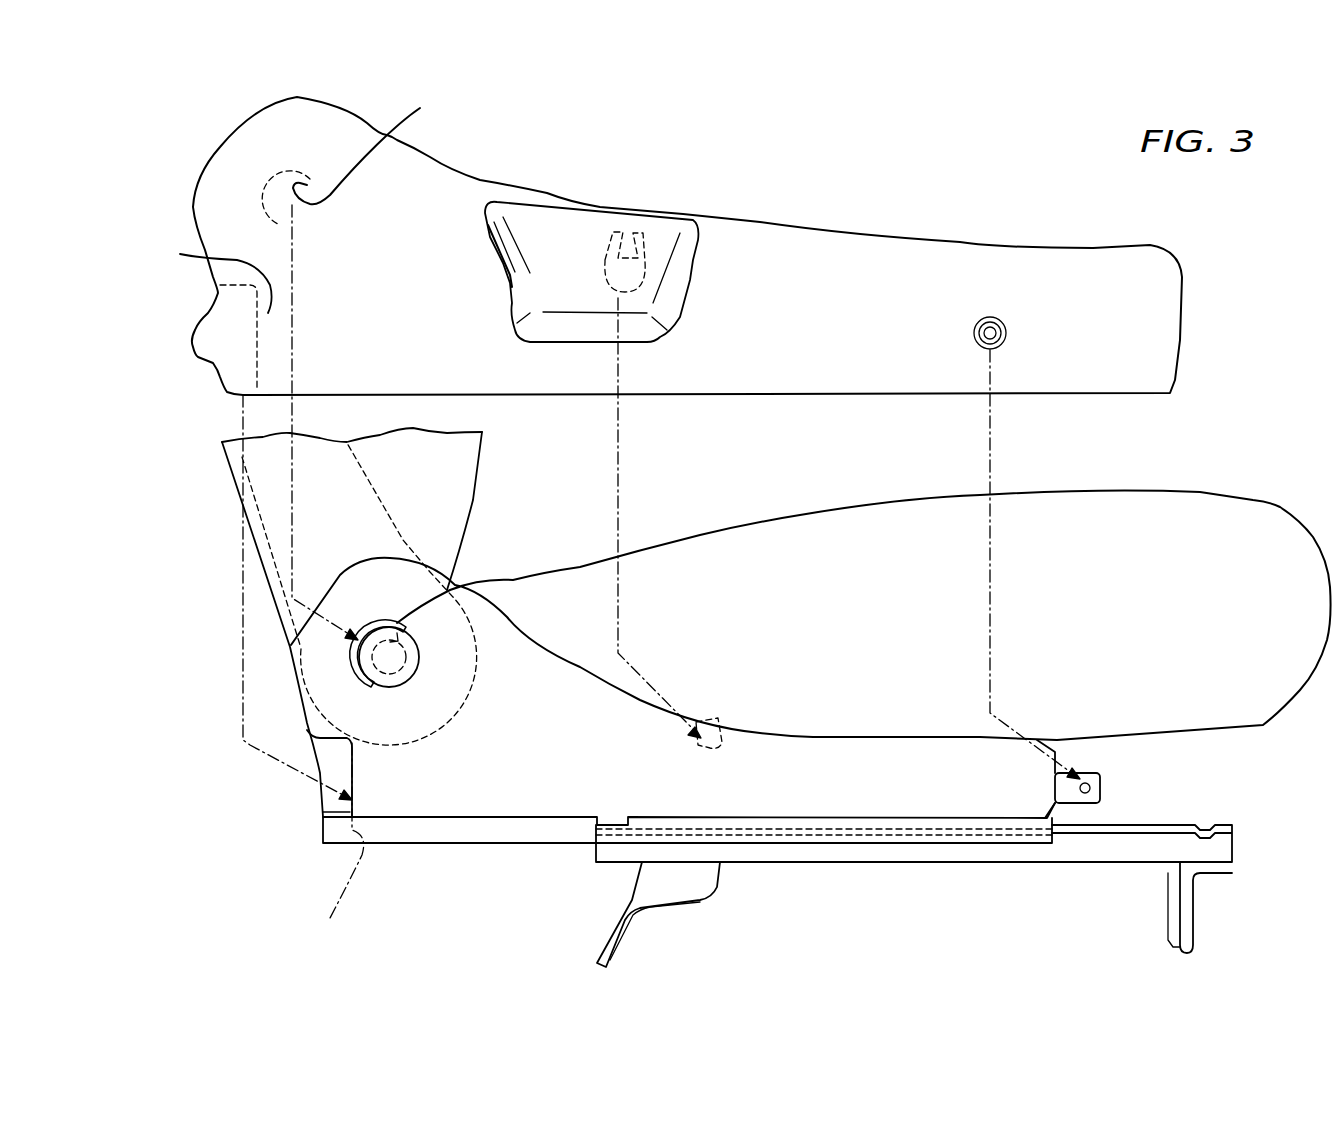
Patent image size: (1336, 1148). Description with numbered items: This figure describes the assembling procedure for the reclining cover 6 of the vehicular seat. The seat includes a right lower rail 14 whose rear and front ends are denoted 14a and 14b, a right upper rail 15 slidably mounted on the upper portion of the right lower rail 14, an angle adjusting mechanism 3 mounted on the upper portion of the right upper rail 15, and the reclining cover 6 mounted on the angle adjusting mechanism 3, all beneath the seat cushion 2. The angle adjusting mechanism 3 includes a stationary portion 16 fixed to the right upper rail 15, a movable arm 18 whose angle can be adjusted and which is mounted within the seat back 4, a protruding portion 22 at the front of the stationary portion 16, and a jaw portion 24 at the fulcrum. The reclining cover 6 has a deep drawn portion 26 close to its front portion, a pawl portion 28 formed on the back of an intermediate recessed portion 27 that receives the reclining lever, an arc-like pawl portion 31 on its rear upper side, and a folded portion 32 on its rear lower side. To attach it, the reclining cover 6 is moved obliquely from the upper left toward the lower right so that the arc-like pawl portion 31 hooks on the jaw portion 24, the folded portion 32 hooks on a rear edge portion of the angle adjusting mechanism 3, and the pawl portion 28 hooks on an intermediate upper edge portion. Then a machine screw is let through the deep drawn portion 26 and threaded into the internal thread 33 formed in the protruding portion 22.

The seat cushion 2 is at (1255, 497).
The angle adjusting mechanism 3 is at (324, 812).
The seat back 4 is at (232, 478).
The reclining cover 6 is at (827, 223).
The right lower rail 14 is at (930, 865).
The rear end of the right lower rail 14a is at (597, 862).
The front end of the right lower rail 14b is at (1232, 862).
The right upper rail 15 is at (453, 845).
The stationary portion 16 is at (307, 730).
The movable arm 18 is at (278, 553).
The protruding portion 22 is at (1098, 775).
The jaw portion 24 is at (357, 655).
The deep drawn portion 26 is at (1006, 333).
The intermediate recessed portion 27 is at (552, 254).
The pawl portion 28 is at (640, 268).
The arc-like pawl portion 31 is at (422, 108).
The folded portion 32 is at (180, 254).
The internal thread 33 is at (1092, 788).